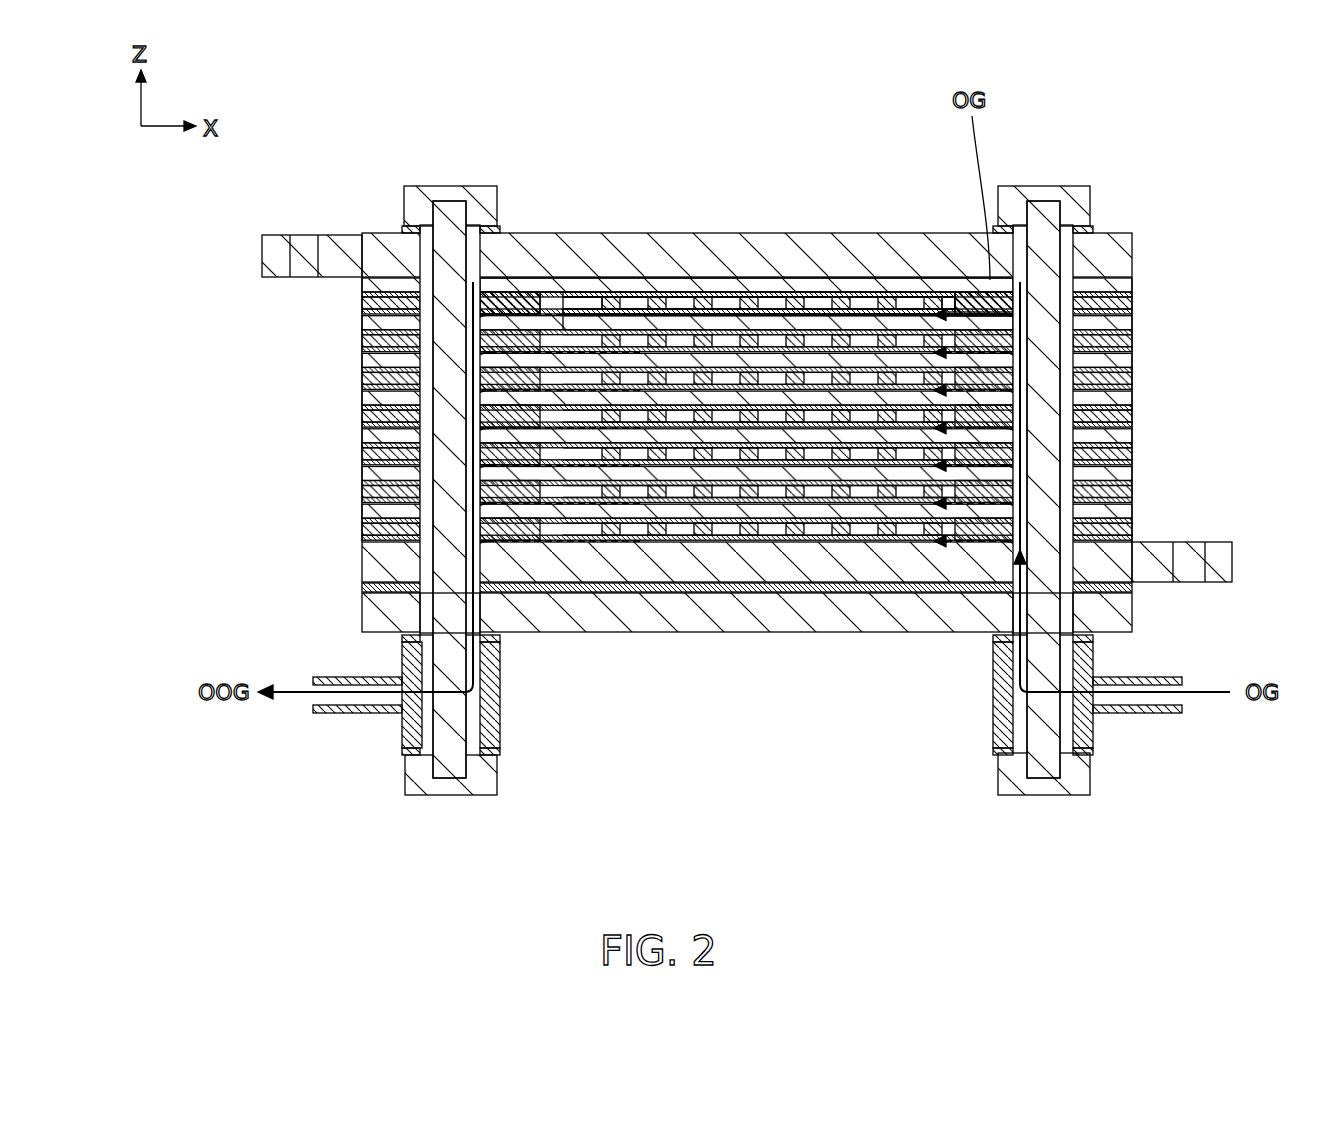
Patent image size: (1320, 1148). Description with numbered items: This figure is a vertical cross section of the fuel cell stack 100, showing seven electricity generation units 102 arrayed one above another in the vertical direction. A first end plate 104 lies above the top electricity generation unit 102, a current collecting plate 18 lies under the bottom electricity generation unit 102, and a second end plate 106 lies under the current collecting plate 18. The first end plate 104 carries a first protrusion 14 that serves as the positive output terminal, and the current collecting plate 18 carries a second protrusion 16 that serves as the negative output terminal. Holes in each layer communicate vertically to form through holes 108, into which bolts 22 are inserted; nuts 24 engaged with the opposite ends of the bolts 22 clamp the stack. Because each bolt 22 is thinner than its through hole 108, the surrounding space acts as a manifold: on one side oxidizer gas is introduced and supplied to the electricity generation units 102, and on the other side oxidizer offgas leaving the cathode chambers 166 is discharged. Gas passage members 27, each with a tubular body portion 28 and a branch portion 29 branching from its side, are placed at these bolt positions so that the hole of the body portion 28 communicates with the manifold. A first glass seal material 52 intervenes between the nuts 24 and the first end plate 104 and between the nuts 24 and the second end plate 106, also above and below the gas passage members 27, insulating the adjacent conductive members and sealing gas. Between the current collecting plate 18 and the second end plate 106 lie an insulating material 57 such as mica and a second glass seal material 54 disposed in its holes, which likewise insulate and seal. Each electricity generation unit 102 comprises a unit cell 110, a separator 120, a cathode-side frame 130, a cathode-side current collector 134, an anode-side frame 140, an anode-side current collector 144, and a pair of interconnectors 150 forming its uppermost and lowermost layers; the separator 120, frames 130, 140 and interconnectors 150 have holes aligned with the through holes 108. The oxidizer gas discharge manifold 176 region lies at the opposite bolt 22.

The first protrusion 14 is at (268, 256).
The second protrusion 16 is at (1215, 545).
The current collecting plate 18 is at (362, 556).
The bolt 22 is at (445, 240).
The nut 24 is at (437, 212).
The gas passage member 27 is at (375, 797).
The body portion 28 is at (402, 730).
The branch portion 29 is at (330, 713).
The first glass seal material 52 is at (415, 229).
The second glass seal material 54 is at (500, 635).
The insulating material 57 is at (362, 588).
The fuel cell stack 100 is at (1178, 330).
The electricity generation unit 102 is at (355, 279).
The first end plate 104 is at (340, 278).
The second end plate 106 is at (362, 620).
The through hole 108 is at (435, 245).
The unit cell 110 is at (775, 300).
The separator 120 is at (545, 295).
The cathode-side frame 130 is at (500, 292).
The cathode-side current collector 134 is at (835, 312).
The anode-side frame 140 is at (515, 290).
The anode-side current collector 144 is at (735, 310).
The interconnector 150 is at (578, 300).
The cathode chamber 166 is at (922, 292).
The oxidant gas discharge manifold 176 is at (912, 312).